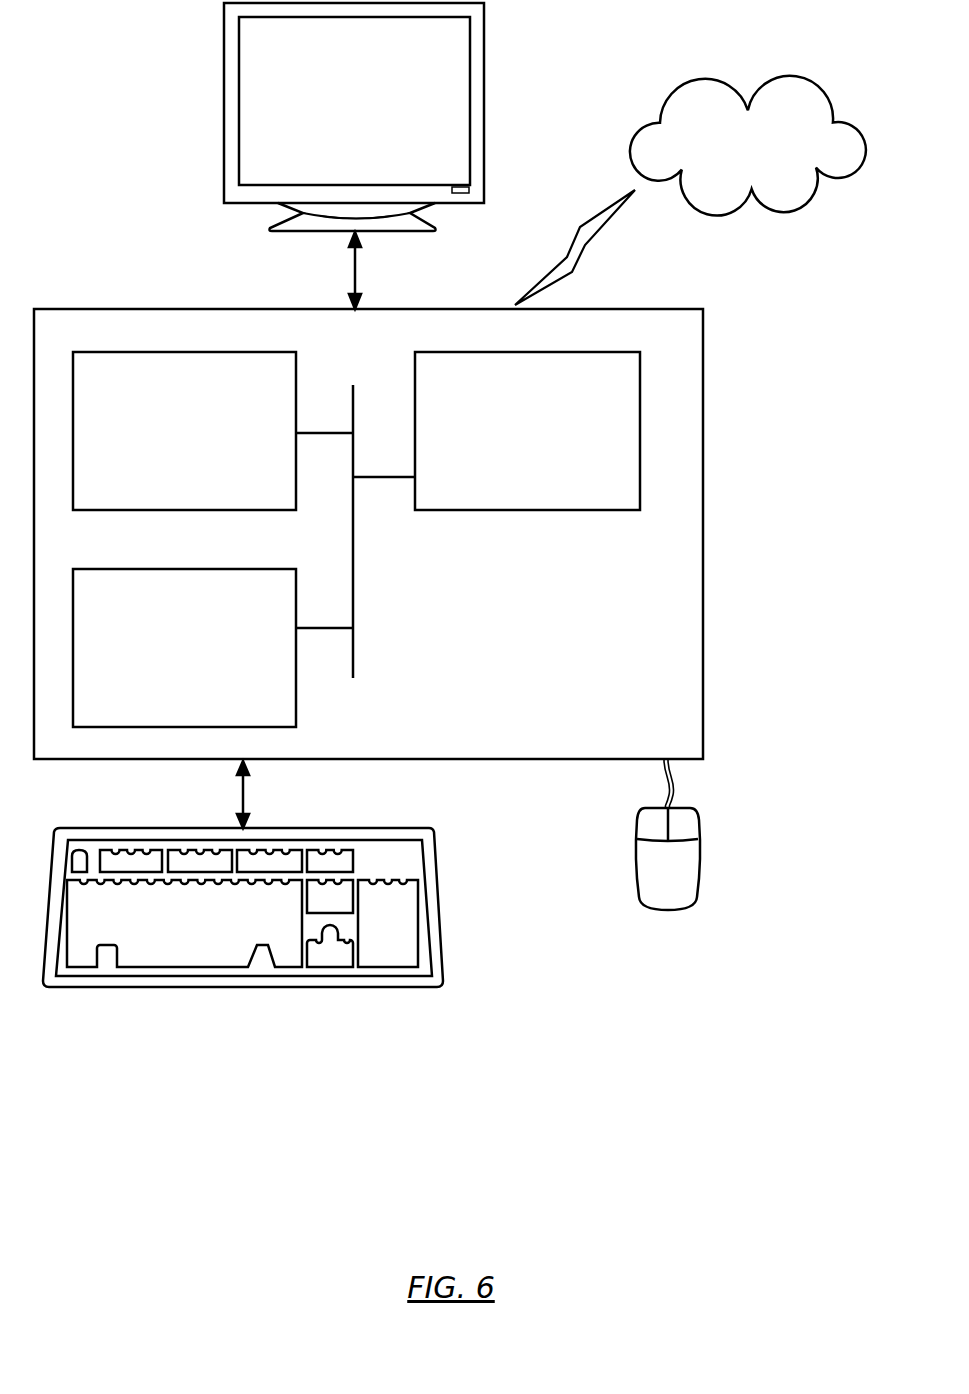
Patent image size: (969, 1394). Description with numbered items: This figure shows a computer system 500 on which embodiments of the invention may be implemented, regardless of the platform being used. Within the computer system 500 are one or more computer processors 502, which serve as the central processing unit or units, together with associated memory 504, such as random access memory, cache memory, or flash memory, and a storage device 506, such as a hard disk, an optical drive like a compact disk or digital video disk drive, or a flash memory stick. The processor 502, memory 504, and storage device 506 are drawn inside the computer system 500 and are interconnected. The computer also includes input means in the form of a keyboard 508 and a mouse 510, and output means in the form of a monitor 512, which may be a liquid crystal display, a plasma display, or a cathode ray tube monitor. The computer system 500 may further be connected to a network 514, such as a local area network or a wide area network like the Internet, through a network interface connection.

The computer system 500 is at (760, 318).
The computer processor 502 is at (496, 431).
The memory 504 is at (213, 431).
The storage device 506 is at (213, 648).
The keyboard 508 is at (243, 874).
The mouse 510 is at (705, 918).
The monitor 512 is at (354, 156).
The network 514 is at (690, 190).